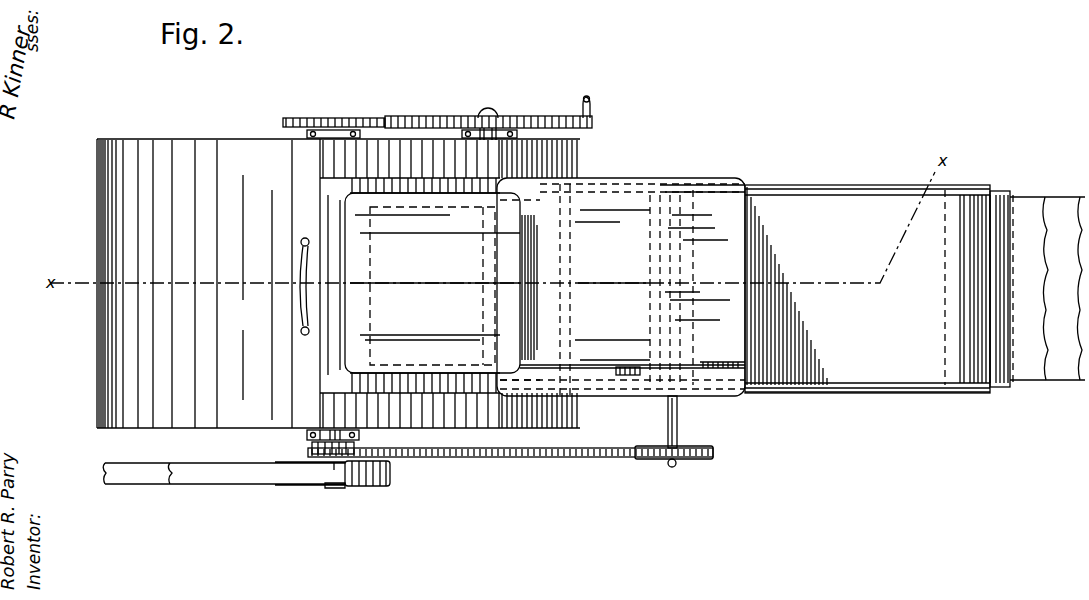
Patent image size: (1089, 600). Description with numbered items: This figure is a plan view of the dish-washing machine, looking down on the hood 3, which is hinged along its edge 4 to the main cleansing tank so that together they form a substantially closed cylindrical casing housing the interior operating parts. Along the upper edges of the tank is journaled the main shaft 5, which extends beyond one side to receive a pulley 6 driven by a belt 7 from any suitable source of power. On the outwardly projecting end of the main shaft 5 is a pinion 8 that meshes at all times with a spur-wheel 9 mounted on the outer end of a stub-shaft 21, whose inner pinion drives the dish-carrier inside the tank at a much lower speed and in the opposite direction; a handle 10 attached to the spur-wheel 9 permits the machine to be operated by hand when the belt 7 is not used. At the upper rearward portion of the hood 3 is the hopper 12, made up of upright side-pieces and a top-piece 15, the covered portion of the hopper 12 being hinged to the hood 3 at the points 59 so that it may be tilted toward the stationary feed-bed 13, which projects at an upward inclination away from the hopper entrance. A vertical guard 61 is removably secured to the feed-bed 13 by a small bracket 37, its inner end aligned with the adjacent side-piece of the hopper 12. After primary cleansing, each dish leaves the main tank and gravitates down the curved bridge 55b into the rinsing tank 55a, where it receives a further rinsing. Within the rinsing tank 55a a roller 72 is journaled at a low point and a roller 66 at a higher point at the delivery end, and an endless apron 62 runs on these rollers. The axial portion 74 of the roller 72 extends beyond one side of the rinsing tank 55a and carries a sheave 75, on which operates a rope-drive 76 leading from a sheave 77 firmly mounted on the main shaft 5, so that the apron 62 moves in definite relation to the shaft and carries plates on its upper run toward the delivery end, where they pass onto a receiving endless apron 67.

The hood 3 is at (216, 284).
The hinge edge of hood 4 is at (96, 216).
The main shaft 5 is at (332, 489).
The pulley 6 is at (364, 488).
The belt 7 is at (220, 476).
The pinion 8 is at (334, 117).
The spur-wheel 9 is at (540, 118).
The handle 10 is at (583, 94).
The hopper 12 is at (343, 212).
The feed-bed 13 is at (612, 285).
The top-piece 15 is at (441, 283).
The stub-shaft 21 is at (485, 115).
The small bracket 37 is at (634, 378).
The rinsing tank 55a is at (812, 394).
The bridge 55b is at (598, 205).
The hinge points 59 is at (498, 193).
The vertical guard 61 is at (708, 360).
The endless apron 62 is at (867, 289).
The roller 66 is at (945, 390).
The endless apron 67 is at (1025, 200).
The roller 72 is at (696, 180).
The axial portion 74 is at (668, 414).
The sheave 75 is at (698, 446).
The rope-drive 76 is at (553, 456).
The sheave 77 is at (308, 446).